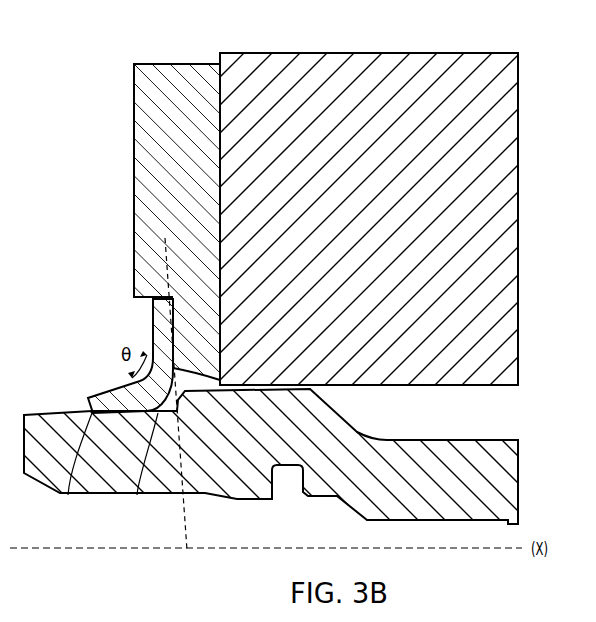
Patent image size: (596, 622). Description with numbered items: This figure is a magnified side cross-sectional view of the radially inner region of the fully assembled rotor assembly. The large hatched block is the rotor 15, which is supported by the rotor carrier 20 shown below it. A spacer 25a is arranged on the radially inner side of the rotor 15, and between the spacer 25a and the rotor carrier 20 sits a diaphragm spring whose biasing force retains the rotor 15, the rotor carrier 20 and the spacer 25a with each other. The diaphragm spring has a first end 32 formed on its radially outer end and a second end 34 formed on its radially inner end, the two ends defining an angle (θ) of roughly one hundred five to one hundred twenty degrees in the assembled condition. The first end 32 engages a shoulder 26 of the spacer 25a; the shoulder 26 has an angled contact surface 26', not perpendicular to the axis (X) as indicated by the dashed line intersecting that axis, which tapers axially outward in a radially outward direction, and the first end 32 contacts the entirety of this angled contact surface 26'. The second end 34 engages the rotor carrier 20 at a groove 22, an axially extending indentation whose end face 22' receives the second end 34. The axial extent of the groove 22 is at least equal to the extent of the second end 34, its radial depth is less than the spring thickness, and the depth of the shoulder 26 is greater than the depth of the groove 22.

The rotor 15 is at (337, 72).
The rotor carrier 20 is at (504, 458).
The groove 22 is at (143, 474).
The end face 22' is at (75, 474).
The spacer 25a is at (180, 74).
The shoulder 26 is at (125, 293).
The angled contact surface 26' is at (370, 305).
The first end 32 is at (157, 333).
The second end 34 is at (100, 400).